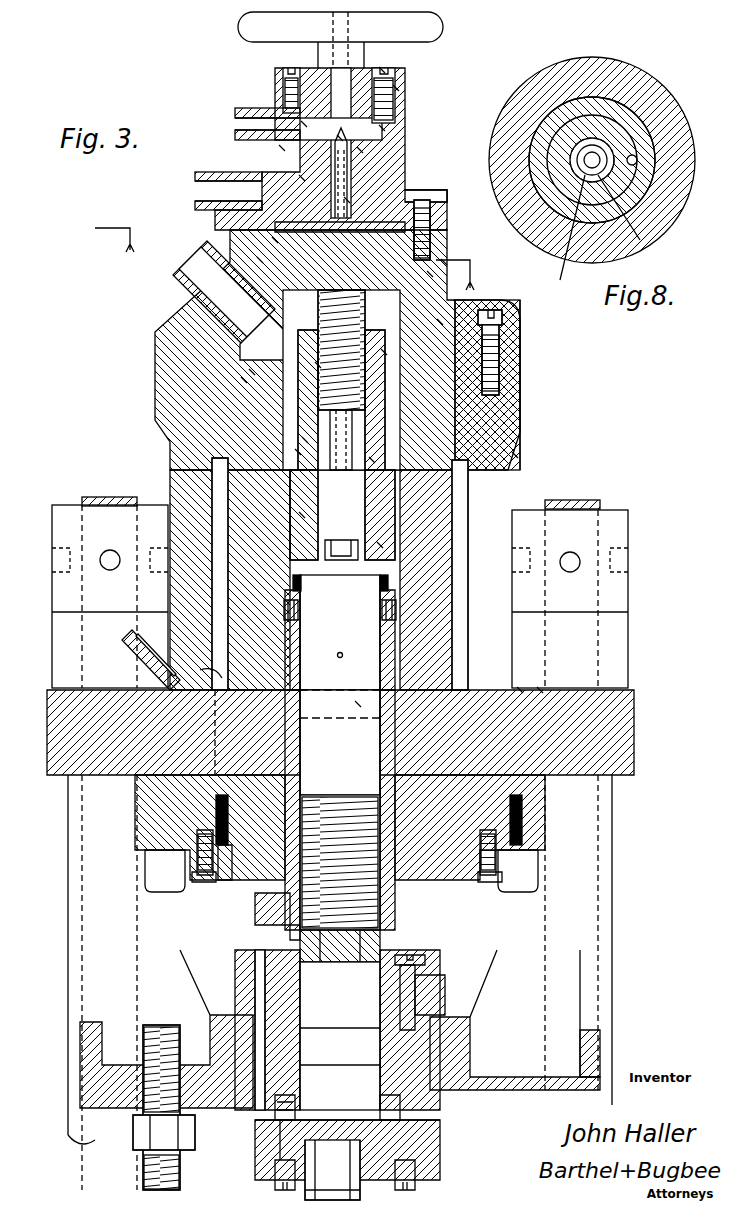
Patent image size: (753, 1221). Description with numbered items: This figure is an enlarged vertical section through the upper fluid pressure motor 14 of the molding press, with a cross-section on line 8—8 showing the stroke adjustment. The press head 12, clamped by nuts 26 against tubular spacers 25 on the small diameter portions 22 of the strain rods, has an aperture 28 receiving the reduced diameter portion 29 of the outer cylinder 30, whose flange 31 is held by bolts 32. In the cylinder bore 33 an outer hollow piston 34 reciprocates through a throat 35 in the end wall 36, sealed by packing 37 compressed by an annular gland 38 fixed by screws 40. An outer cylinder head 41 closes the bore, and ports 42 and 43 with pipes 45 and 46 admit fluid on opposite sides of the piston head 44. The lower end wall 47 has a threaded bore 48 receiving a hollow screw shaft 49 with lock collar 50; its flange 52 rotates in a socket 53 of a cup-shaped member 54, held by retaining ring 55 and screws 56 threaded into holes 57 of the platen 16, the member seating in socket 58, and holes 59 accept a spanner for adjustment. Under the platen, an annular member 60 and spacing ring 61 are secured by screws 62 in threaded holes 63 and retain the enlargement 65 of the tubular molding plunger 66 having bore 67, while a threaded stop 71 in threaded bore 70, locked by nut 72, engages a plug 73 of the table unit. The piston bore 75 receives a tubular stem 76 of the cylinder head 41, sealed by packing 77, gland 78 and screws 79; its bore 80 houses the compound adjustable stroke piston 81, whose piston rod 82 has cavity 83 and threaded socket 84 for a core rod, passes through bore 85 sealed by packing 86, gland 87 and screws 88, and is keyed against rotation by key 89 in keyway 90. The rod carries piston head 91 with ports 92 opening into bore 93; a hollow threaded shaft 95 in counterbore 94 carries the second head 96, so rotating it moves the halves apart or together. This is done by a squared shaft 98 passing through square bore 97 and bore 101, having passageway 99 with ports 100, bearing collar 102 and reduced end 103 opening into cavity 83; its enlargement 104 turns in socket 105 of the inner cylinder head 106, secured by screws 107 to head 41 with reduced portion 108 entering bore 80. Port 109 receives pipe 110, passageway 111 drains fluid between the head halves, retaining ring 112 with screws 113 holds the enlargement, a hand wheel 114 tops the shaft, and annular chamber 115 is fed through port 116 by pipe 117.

In FIG. 3, the press head 12 is at (634, 738).
In FIG. 3, the reciprocable fluid pressure motor 14 is at (526, 394).
In FIG. 3, the platen 16 is at (602, 1046).
In FIG. 3, the small diameter portion of strain rod 22 is at (95, 490).
In FIG. 3, the tubular spacer 25 is at (68, 883).
In FIG. 3, the nut 26 is at (62, 594).
In FIG. 3, the aperture 28 is at (540, 690).
In FIG. 3, the reduced diameter portion of outer cylinder 29 is at (520, 690).
In FIG. 3, the outer cylinder 30 is at (470, 486).
In FIG. 3, the flange 31 is at (545, 806).
In FIG. 3, the bolts 32 is at (172, 892).
In FIG. 3, the cylinder bore 33 is at (214, 500).
In FIG. 3, the outer hollow piston 34 is at (515, 455).
In FIG. 3, the throat 35 is at (244, 736).
In FIG. 3, the end wall 36 is at (245, 752).
In FIG. 3, the packing 37 is at (232, 812).
In FIG. 3, the annular gland 38 is at (212, 880).
In FIG. 3, the screws 40 is at (200, 884).
In FIG. 3, the outer cylinder head 41 is at (175, 353).
In FIG. 8, the outer cylinder head 41 is at (670, 210).
In FIG. 3, the port 42 is at (252, 340).
In FIG. 3, the port 43 is at (213, 677).
In FIG. 3, the piston head 44 is at (200, 466).
In FIG. 3, the pipe 45 is at (192, 262).
In FIG. 3, the pipe 46 is at (128, 644).
In FIG. 3, the lower end wall of piston 47 is at (226, 882).
In FIG. 3, the threaded bore 48 is at (384, 812).
In FIG. 3, the hollow screw shaft 49 is at (300, 740).
In FIG. 3, the lock nut or collar 50 is at (256, 920).
In FIG. 3, the enlargement or flange 52 is at (280, 1000).
In FIG. 3, the socket 53 is at (300, 1012).
In FIG. 3, the cup-shaped member 54 is at (445, 1000).
In FIG. 3, the retaining ring 55 is at (430, 975).
In FIG. 3, the retaining screws 56 is at (428, 958).
In FIG. 3, the threaded holes 57 is at (300, 678).
In FIG. 3, the socket 58 is at (470, 1038).
In FIG. 3, the diametrically opposite holes 59 is at (290, 936).
In FIG. 3, the annular member 60 is at (420, 1160).
In FIG. 3, the spacing ring 61 is at (440, 1130).
In FIG. 3, the screws 62 is at (282, 1190).
In FIG. 3, the threaded holes 63 is at (296, 1098).
In FIG. 3, the enlargement 65 is at (365, 1158).
In FIG. 3, the tubular molding plunger 66 is at (362, 1190).
In FIG. 3, the bore 67 is at (378, 1115).
In FIG. 3, the threaded bore 70 is at (150, 1070).
In FIG. 3, the threaded stop 71 is at (182, 1168).
In FIG. 3, the lock nut 72 is at (185, 1132).
In FIG. 3, the plug 73 is at (215, 1158).
In FIG. 3, the bore 75 is at (298, 452).
In FIG. 3, the tubular stem 76 is at (300, 396).
In FIG. 3, the packing 77 is at (305, 440).
In FIG. 3, the annular gland 78 is at (252, 372).
In FIG. 3, the screws 79 is at (244, 380).
In FIG. 3, the bore 80 is at (300, 480).
In FIG. 3, the compound adjustable stroke piston 81 is at (430, 274).
In FIG. 3, the piston rod 82 is at (358, 704).
In FIG. 3, the bore or cavity 83 is at (300, 585).
In FIG. 3, the threaded socket 84 is at (325, 962).
In FIG. 3, the bore 85 is at (302, 515).
In FIG. 3, the packing 86 is at (380, 588).
In FIG. 3, the gland 87 is at (378, 612).
In FIG. 3, the screws 88 is at (382, 631).
In FIG. 3, the key 89 is at (380, 545).
In FIG. 3, the keyway 90 is at (372, 474).
In FIG. 3, the piston head 91 is at (440, 322).
In FIG. 3, the ports 92 is at (384, 352).
In FIG. 3, the bore 93 is at (365, 386).
In FIG. 3, the counterbore 94 is at (260, 260).
In FIG. 3, the hollow threaded shaft 95 is at (318, 365).
In FIG. 3, the piston head 96 is at (275, 240).
In FIG. 8, the piston head 96 is at (637, 167).
In FIG. 3, the square bore 97 is at (318, 236).
In FIG. 8, the square bore 97 is at (640, 125).
In FIG. 3, the squared shaft 98 is at (347, 200).
In FIG. 8, the squared shaft 98 is at (640, 220).
In FIG. 3, the passageway 99 is at (345, 160).
In FIG. 8, the passageway 99 is at (596, 224).
In FIG. 3, the cross passage or ports 100 is at (340, 138).
In FIG. 3, the bore 101 is at (354, 432).
In FIG. 3, the bearing collar 102 is at (368, 494).
In FIG. 3, the reduced diameter end 103 is at (335, 555).
In FIG. 3, the annular enlargement 104 is at (360, 150).
In FIG. 3, the socket 105 is at (282, 148).
In FIG. 3, the inner cylinder head 106 is at (405, 108).
In FIG. 3, the screws 107 is at (437, 200).
In FIG. 3, the reduced diameter portion 108 is at (432, 228).
In FIG. 3, the port 109 is at (302, 178).
In FIG. 3, the pipe 110 is at (205, 175).
In FIG. 3, the passageway 111 is at (444, 262).
In FIG. 8, the passageway 111 is at (638, 158).
In FIG. 3, the retaining ring 112 is at (396, 88).
In FIG. 3, the screws 113 is at (382, 70).
In FIG. 3, the hand wheel 114 is at (432, 32).
In FIG. 3, the annular chamber 115 is at (382, 128).
In FIG. 3, the port 116 is at (304, 124).
In FIG. 3, the pipe 117 is at (258, 110).
In FIG. 3, the section line 8 is at (284, 266).